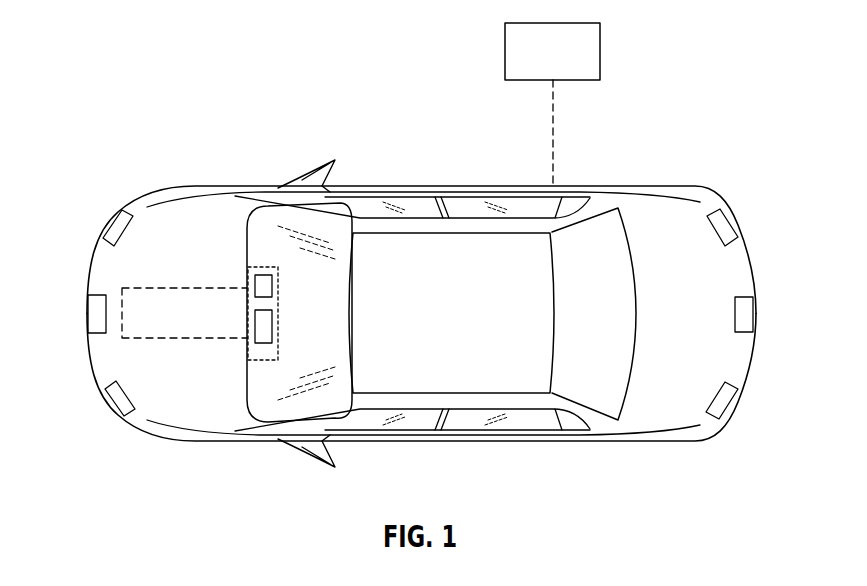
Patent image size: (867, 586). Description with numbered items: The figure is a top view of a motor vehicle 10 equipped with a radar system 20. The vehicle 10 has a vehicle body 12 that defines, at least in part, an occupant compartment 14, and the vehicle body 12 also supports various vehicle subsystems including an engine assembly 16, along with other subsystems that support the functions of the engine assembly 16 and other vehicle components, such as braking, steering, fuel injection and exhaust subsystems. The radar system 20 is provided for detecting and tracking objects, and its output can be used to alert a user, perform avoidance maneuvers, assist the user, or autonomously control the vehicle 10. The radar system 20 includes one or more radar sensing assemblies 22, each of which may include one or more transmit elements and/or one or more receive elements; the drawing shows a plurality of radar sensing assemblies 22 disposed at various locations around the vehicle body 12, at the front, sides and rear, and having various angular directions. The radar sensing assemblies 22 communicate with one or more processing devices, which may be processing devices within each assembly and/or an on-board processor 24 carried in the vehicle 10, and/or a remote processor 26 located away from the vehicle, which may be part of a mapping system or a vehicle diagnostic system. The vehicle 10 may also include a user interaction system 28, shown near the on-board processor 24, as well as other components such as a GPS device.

The motor vehicle 10 is at (270, 188).
The vehicle body 12 is at (618, 422).
The occupant compartment 14 is at (493, 382).
The engine assembly 16 is at (122, 288).
The radar system 20 is at (420, 130).
The radar sensing assemblies 22 is at (122, 228).
The on-board processor 24 is at (267, 283).
The remote processor 26 is at (588, 55).
The user interaction system 28 is at (267, 333).